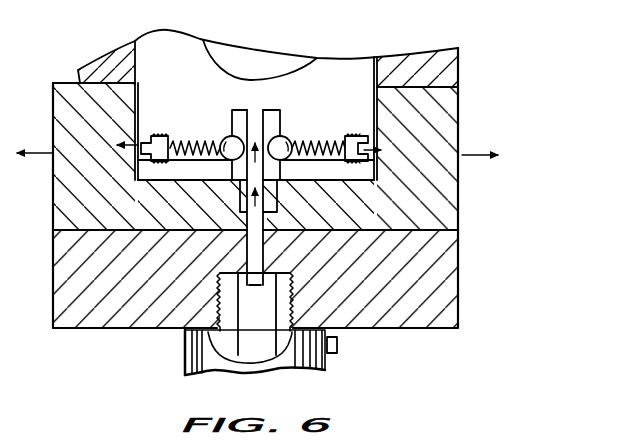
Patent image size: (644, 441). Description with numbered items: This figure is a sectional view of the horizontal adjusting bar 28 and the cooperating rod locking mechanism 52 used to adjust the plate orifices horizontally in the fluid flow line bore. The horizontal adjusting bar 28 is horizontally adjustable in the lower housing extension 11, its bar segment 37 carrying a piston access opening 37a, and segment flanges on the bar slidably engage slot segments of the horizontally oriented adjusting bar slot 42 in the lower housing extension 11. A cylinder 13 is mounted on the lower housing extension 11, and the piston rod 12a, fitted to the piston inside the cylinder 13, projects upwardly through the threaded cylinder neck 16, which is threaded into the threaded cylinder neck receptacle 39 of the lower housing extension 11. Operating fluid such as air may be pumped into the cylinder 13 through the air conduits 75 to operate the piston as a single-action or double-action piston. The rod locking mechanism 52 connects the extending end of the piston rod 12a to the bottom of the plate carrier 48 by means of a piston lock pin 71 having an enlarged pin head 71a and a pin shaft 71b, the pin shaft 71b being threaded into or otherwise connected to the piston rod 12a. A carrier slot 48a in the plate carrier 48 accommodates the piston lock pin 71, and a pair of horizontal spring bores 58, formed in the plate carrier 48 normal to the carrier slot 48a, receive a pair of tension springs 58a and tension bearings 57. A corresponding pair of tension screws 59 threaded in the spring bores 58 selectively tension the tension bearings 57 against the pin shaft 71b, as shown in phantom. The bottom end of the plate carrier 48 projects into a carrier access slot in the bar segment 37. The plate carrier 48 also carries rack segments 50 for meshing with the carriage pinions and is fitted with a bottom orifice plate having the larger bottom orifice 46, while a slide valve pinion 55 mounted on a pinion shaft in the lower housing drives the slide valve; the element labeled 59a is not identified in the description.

The lower housing extension 11 is at (438, 67).
The piston rod 12a is at (238, 322).
The cylinder 13 is at (188, 371).
The threaded cylinder neck 16 is at (220, 291).
The horizontal adjusting bar 28 is at (400, 252).
The bar segment 37 is at (103, 222).
The piston access opening 37a is at (372, 88).
The threaded cylinder neck receptacle 39 is at (300, 302).
The adjusting bar slot 42 is at (78, 73).
The bottom orifice 46 is at (254, 64).
The plate carrier 48 is at (321, 60).
The carrier slot 48a is at (283, 112).
The rack segment 50 is at (134, 165).
The rod locking mechanism 52 is at (221, 127).
The slide valve pinion 55 is at (184, 140).
The tension bearing 57 is at (238, 133).
The horizontal spring bore 58 is at (425, 128).
The tension spring 58a is at (185, 152).
The tension screw 59 is at (396, 136).
The chamber side wall 59a is at (134, 128).
The piston lock pin 71 is at (259, 111).
The enlarged pin head 71a is at (290, 128).
The pin shaft 71b is at (267, 188).
The air conduit 75 is at (336, 340).